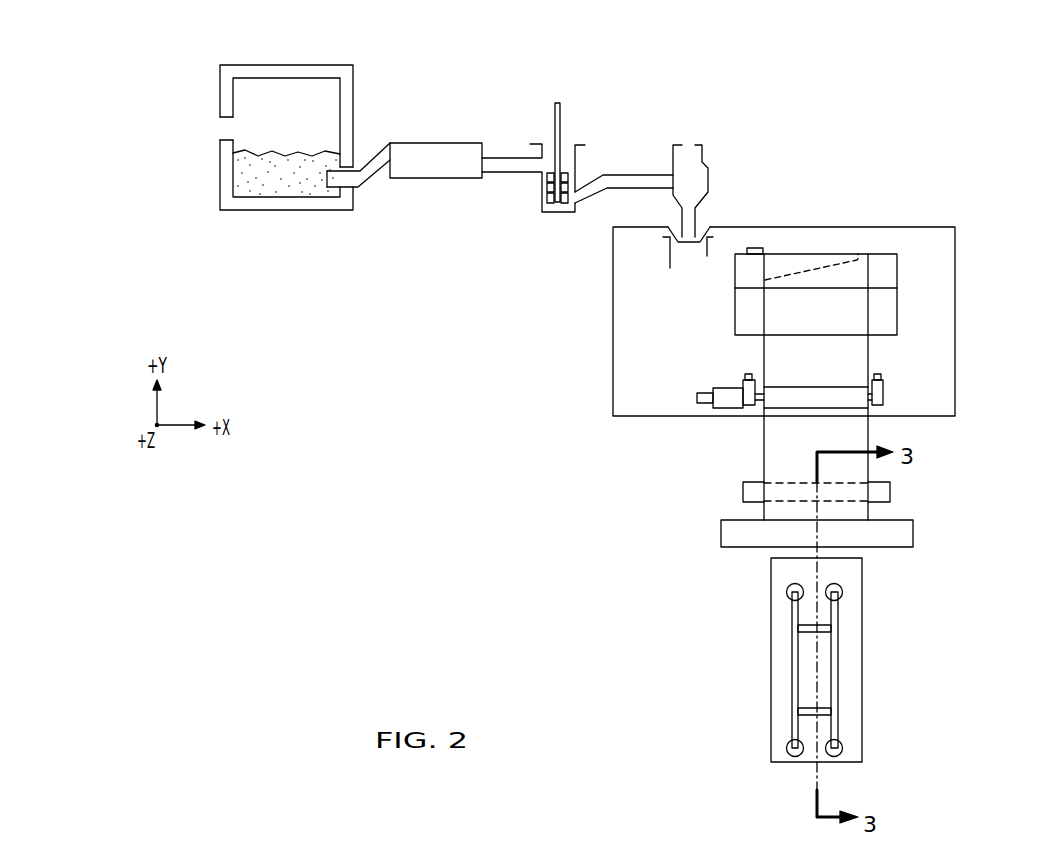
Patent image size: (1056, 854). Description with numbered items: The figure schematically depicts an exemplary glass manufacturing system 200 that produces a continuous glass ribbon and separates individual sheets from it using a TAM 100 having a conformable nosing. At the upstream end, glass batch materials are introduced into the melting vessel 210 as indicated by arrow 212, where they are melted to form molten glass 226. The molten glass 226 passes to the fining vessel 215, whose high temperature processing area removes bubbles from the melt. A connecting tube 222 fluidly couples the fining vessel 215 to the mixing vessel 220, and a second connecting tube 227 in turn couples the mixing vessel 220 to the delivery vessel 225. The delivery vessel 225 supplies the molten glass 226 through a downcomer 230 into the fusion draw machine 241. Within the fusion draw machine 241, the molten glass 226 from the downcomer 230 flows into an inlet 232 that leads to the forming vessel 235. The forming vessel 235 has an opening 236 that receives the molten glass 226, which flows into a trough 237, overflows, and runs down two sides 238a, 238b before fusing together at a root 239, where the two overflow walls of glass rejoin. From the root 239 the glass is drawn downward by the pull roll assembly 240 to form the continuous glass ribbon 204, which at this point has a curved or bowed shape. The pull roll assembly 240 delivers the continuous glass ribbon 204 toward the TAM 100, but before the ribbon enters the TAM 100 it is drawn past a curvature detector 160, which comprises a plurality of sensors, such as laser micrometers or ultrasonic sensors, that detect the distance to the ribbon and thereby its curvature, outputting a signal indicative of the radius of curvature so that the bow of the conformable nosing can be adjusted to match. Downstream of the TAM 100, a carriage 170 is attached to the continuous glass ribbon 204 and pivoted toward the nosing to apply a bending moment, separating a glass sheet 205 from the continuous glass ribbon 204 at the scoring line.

The glass manufacturing system 200 is at (972, 87).
The melting vessel 210 is at (220, 80).
The arrow 212 is at (180, 138).
The molten glass 226 is at (311, 153).
The fining vessel 215 is at (422, 143).
The connecting tube 222 is at (503, 173).
The mixing vessel 220 is at (587, 157).
The connecting tube 227 is at (620, 190).
The delivery vessel 225 is at (708, 176).
The downcomer 230 is at (699, 218).
The fusion draw machine 241 is at (613, 338).
The inlet 232 is at (672, 278).
The opening 236 is at (735, 282).
The forming vessel 235 is at (897, 267).
The trough 237 is at (820, 258).
The first side 238a is at (775, 320).
The second side 238b is at (897, 312).
The root 239 is at (798, 336).
The continuous glass ribbon 204 is at (762, 418).
The pull roll assembly 240 is at (884, 385).
The curvature detector 160 is at (890, 492).
The TAM 100 is at (721, 533).
The carriage 170 is at (765, 669).
The glass sheet 205 is at (862, 678).